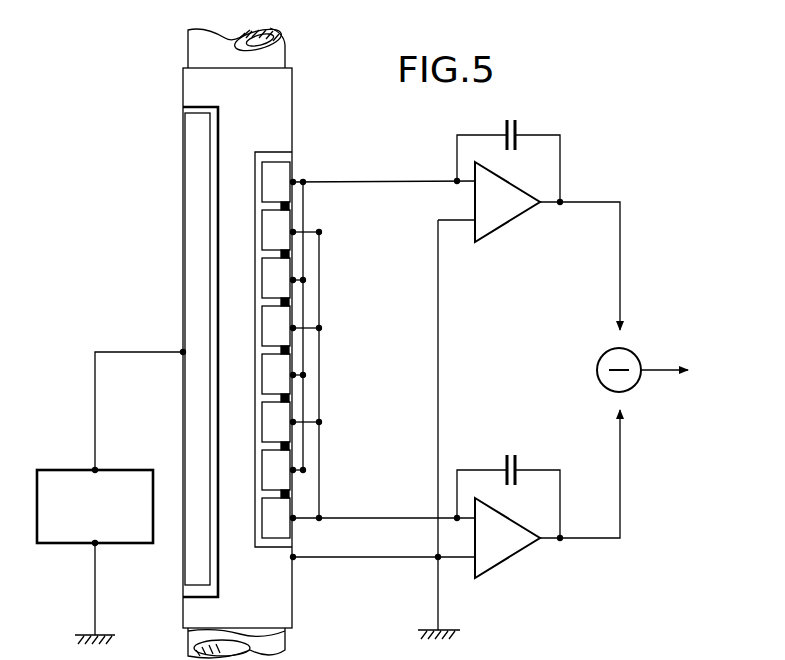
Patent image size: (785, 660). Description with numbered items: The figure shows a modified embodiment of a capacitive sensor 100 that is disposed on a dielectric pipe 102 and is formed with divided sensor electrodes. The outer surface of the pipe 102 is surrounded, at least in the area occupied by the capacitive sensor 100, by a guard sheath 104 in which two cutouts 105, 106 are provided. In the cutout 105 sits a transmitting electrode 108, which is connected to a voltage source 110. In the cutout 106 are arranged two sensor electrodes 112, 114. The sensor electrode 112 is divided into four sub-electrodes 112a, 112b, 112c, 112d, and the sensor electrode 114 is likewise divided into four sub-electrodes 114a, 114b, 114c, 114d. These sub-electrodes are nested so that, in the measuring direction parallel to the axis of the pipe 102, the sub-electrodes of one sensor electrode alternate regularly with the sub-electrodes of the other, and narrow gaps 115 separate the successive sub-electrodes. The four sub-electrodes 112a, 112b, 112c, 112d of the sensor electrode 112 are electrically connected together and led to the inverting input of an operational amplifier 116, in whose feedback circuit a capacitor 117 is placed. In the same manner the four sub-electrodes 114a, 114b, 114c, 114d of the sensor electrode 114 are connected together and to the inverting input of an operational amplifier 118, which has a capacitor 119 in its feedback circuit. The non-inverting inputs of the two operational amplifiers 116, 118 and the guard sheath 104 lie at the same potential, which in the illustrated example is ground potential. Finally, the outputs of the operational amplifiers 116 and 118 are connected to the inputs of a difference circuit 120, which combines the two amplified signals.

The capacitive sensor 100 is at (170, 189).
The dielectric pipe 102 is at (281, 56).
The guard sheath 104 is at (190, 88).
The cutout 105 is at (222, 124).
The cutout 106 is at (276, 150).
The transmitting electrode 108 is at (190, 248).
The voltage source 110 is at (66, 471).
The sensor electrode 112 is at (301, 172).
The sub-electrode 112a is at (292, 185).
The sub-electrode 112b is at (285, 271).
The sub-electrode 112c is at (284, 367).
The sub-electrode 112d is at (284, 460).
The sensor electrode 114 is at (306, 532).
The sub-electrode 114a is at (282, 238).
The sub-electrode 114b is at (284, 317).
The sub-electrode 114c is at (284, 412).
The sub-electrode 114d is at (285, 505).
The gap 115 is at (286, 205).
The operational amplifier 116 is at (510, 212).
The capacitor 117 is at (516, 125).
The operational amplifier 118 is at (503, 550).
The capacitor 119 is at (516, 460).
The difference circuit 120 is at (632, 355).